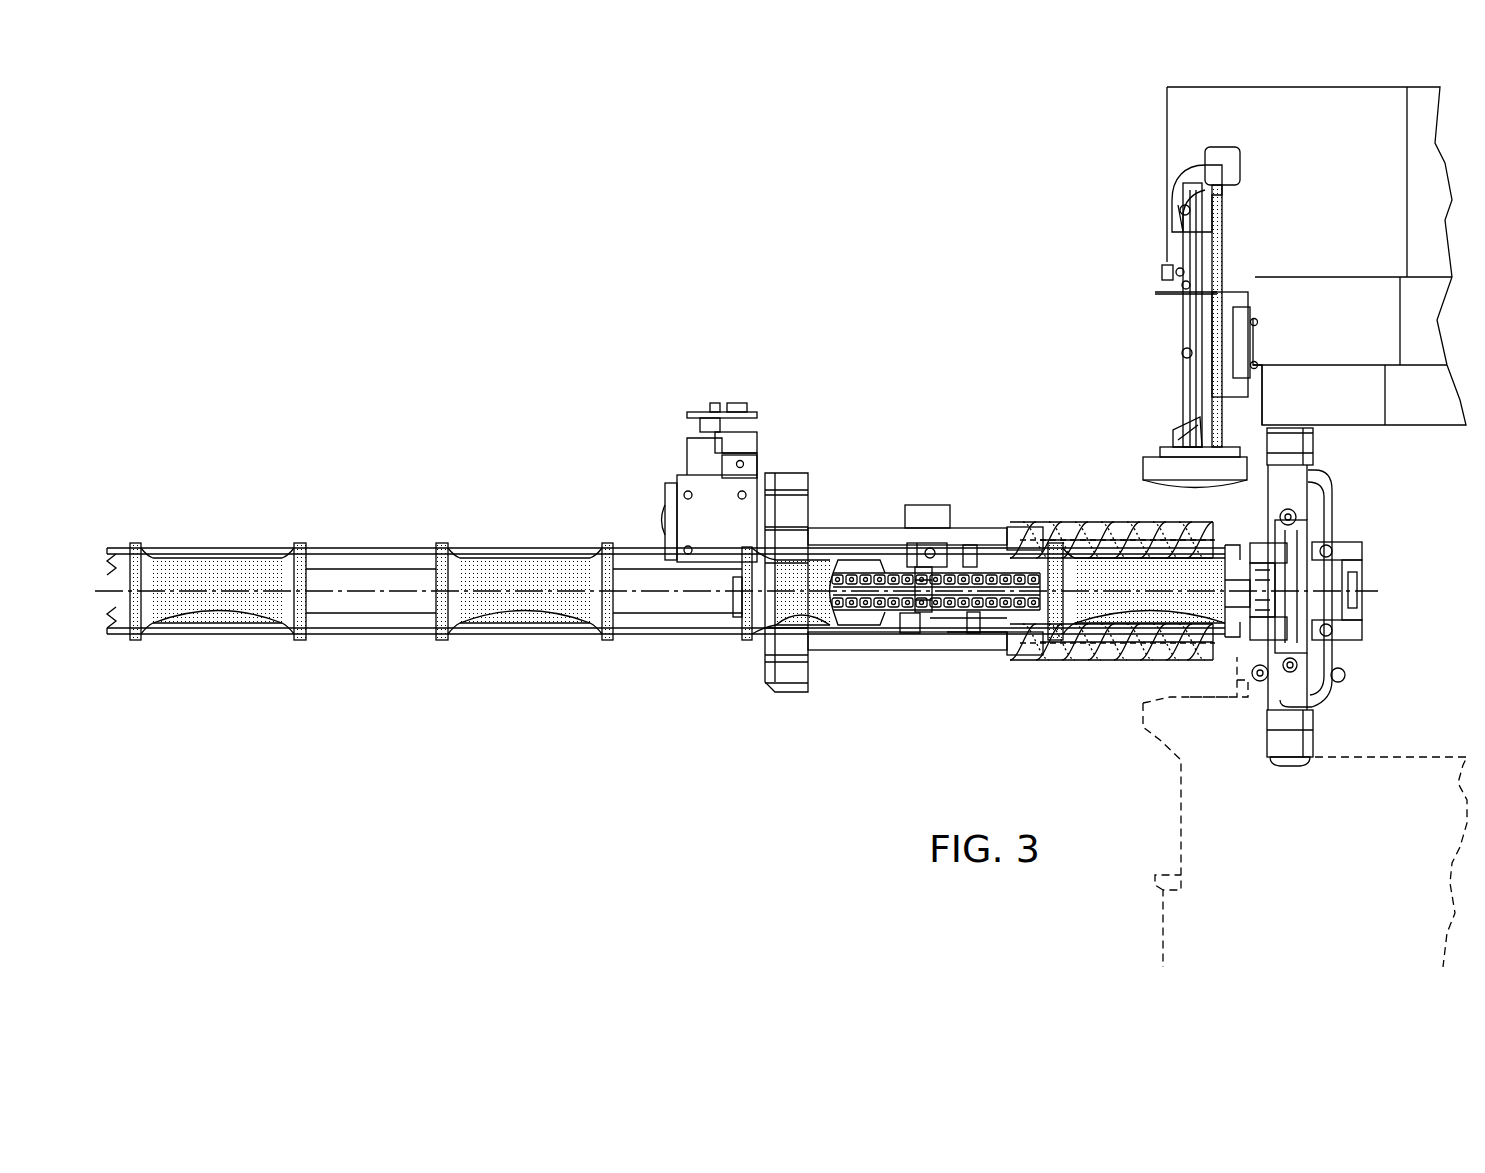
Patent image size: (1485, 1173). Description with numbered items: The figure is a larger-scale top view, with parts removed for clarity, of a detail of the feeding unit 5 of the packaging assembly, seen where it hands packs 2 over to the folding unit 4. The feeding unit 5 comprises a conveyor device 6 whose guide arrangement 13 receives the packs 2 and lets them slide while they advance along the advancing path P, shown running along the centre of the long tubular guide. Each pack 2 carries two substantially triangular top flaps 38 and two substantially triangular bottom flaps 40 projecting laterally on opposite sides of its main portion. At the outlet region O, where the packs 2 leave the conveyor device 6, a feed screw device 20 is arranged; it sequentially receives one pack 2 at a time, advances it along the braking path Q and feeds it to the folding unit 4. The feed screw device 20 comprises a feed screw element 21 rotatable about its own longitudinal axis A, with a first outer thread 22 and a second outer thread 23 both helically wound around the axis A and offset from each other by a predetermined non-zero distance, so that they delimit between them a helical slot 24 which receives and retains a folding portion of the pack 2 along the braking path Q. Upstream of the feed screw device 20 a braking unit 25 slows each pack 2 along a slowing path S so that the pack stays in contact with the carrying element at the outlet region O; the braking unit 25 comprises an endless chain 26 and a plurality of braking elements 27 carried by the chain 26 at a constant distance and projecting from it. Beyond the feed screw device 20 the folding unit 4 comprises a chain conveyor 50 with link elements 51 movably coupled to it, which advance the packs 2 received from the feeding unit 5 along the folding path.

The pack 2 is at (215, 575).
The folding unit 4 is at (1053, 217).
The feeding unit 5 is at (308, 385).
The conveyor device 6 is at (286, 478).
The guide arrangement 13 is at (400, 548).
The feed screw device 20 is at (1120, 460).
The feed screw element 21 is at (1012, 530).
The first outer thread 22 is at (1062, 522).
The second outer thread 23 is at (1092, 525).
The helical slot 24 is at (1160, 520).
The braking unit 25 is at (882, 565).
The endless chain 26 is at (875, 620).
The braking element 27 is at (925, 575).
The top flap 38 is at (300, 548).
The bottom flap 40 is at (141, 548).
The chain conveyor 50 is at (1308, 197).
The link element 51 is at (1350, 510).
The longitudinal axis A is at (995, 540).
The outlet region O is at (1035, 425).
The advancing path P is at (372, 588).
The braking path Q is at (1128, 598).
The slowing path S is at (940, 600).